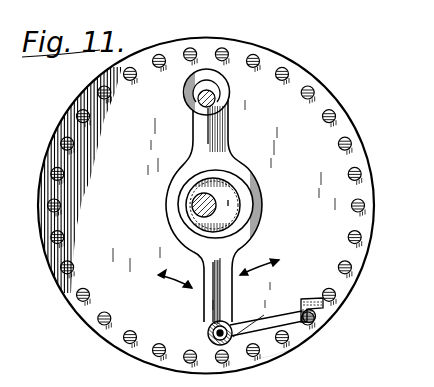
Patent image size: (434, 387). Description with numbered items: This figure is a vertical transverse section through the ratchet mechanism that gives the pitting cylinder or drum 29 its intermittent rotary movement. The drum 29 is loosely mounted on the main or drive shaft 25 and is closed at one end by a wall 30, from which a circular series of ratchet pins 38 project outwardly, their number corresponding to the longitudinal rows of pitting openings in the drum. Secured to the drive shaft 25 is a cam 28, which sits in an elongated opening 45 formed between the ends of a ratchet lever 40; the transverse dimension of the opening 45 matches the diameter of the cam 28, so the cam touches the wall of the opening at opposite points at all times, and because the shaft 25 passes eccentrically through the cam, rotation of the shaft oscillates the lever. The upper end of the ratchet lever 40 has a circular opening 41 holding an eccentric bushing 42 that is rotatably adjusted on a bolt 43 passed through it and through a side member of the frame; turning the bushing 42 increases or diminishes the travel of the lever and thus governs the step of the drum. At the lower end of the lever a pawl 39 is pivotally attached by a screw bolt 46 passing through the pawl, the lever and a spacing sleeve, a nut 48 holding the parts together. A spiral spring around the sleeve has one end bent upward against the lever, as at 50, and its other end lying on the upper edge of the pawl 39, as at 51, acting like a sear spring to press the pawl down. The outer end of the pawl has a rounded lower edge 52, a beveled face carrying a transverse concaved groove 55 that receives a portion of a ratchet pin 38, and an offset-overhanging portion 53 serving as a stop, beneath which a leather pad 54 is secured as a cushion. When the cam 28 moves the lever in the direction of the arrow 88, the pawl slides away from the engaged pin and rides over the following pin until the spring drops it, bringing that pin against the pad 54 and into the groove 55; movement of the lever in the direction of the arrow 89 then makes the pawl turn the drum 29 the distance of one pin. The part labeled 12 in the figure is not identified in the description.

The pivot pin 12 is at (211, 332).
The main or drive shaft 25 is at (192, 206).
The cam 28 is at (225, 211).
The pitting cylinder or drum 29 is at (104, 340).
The wall 30 is at (350, 221).
The ratchet pins 38 is at (156, 70).
The pawl 39 is at (270, 328).
The ratchet lever 40 is at (258, 177).
The circular opening 41 is at (230, 98).
The eccentric bushing 42 is at (219, 86).
The bolt 43 is at (198, 101).
The elongated opening 45 is at (240, 236).
The screw bolt 46 is at (212, 323).
The nut 48 is at (219, 345).
The spring end bent in contact with the ratchet lever 50 is at (266, 315).
The spring extremity in contact with the pawl 51 is at (235, 296).
The rounded lower edge 52 is at (301, 329).
The offset-overhanging portion 53 is at (325, 303).
The pad of leather 54 is at (322, 313).
The transverse concaved groove 55 is at (303, 314).
The arrow 88 is at (175, 274).
The arrow 89 is at (270, 264).